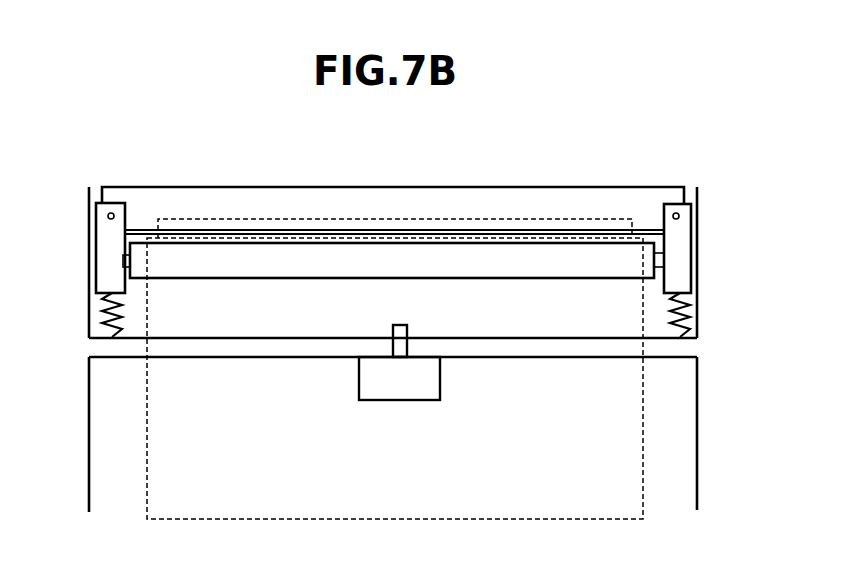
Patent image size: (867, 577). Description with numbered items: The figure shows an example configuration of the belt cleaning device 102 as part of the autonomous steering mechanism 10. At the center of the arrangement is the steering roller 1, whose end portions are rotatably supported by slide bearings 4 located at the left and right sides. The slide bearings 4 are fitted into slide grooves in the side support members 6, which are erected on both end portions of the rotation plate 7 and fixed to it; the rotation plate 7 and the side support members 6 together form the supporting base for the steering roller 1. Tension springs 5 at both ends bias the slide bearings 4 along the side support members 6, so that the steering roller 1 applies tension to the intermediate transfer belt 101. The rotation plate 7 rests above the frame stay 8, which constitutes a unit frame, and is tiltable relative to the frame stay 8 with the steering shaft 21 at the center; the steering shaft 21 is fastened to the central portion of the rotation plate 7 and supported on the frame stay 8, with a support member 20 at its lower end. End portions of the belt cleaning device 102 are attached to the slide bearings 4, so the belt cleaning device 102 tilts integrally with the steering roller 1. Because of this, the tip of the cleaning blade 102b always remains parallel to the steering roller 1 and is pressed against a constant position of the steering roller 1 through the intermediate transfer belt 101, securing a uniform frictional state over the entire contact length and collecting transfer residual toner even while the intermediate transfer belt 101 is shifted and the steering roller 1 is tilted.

The steering roller 1 is at (250, 272).
The slide bearings 4 is at (125, 215).
The tension springs 5 is at (118, 305).
The side support members 6 is at (91, 190).
The rotation plate 7 is at (532, 338).
The frame stay 8 is at (532, 357).
The autonomous steering mechanism 10 is at (413, 410).
The support member 20 is at (359, 383).
The steering shaft 21 is at (407, 350).
The intermediate transfer belt 101 is at (147, 398).
The belt cleaning device 102 is at (268, 197).
The cleaning blade 102b is at (455, 218).